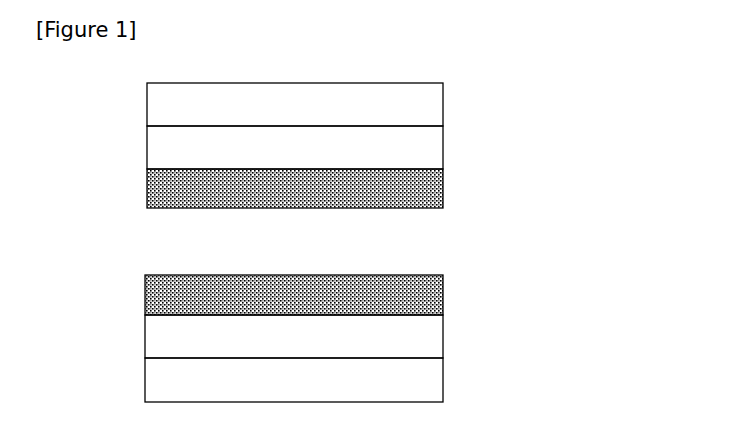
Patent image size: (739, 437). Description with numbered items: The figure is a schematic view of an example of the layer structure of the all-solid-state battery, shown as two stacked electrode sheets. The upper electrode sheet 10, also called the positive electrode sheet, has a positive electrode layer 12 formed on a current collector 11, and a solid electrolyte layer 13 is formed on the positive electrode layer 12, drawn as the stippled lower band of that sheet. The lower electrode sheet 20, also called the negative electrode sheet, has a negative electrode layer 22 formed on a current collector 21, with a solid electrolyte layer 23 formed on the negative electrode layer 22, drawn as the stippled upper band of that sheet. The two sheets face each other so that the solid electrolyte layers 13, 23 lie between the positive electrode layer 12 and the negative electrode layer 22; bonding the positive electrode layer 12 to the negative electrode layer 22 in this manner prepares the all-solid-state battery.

The electrode sheet 10 is at (378, 146).
The current collector 11 is at (445, 101).
The positive electrode layer 12 is at (445, 148).
The solid electrolyte layer 13 is at (445, 188).
The electrode sheet 20 is at (372, 339).
The current collector 21 is at (334, 380).
The negative electrode layer 22 is at (445, 336).
The solid electrolyte layer 23 is at (445, 293).